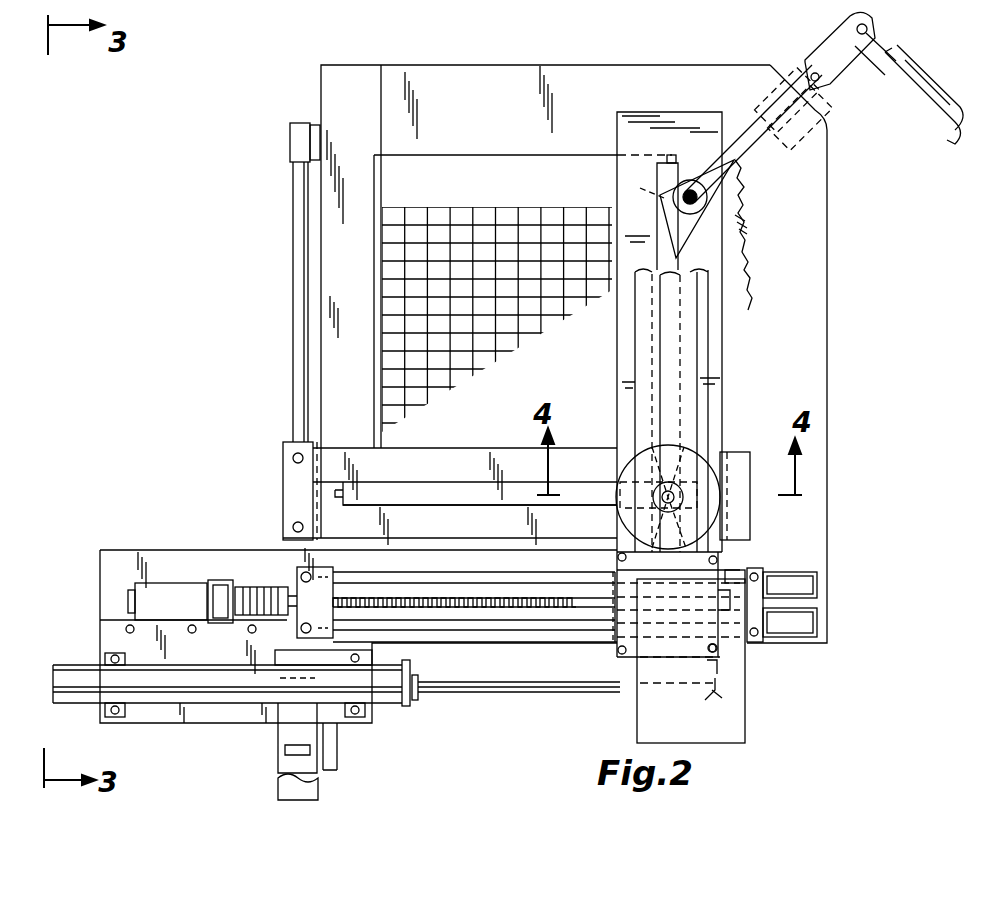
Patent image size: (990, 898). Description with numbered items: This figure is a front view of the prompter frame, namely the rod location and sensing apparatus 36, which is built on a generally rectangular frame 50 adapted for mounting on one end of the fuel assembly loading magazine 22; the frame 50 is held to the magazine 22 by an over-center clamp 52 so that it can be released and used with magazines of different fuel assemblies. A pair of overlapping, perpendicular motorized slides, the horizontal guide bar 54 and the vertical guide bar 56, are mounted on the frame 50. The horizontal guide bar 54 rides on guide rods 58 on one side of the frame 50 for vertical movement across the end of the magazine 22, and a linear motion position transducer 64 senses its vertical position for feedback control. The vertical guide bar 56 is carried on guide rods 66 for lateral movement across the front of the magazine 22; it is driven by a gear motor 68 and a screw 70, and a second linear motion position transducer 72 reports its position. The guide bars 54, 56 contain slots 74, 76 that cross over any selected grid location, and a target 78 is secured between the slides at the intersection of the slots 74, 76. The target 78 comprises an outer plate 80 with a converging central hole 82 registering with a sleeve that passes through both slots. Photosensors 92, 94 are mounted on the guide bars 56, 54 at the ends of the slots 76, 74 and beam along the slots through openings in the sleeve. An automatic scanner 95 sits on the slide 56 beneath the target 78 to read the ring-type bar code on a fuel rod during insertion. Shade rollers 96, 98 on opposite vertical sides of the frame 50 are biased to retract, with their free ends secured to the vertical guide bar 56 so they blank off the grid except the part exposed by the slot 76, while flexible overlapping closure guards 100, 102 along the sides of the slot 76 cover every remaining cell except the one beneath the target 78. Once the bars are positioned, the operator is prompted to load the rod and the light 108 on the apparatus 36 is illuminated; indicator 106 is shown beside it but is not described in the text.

The fuel assembly loading magazine 22 is at (493, 207).
The rod location and sensing apparatus 36 is at (232, 170).
The frame 50 is at (318, 123).
The over-center clamp 52 is at (815, 60).
The horizontal guide bar 54 is at (500, 455).
The vertical guide bar 56 is at (632, 178).
The guide rods 58 is at (293, 278).
The linear motion position transducer 64 is at (290, 733).
The guide rods 66 is at (545, 628).
The gear motor 68 is at (253, 586).
The screw 70 is at (470, 600).
The linear motion position transducer 72 is at (205, 690).
The slot 74 is at (460, 487).
The slot 76 is at (660, 238).
The target 78 is at (716, 454).
The outer plate 80 is at (705, 506).
The converging central hole 82 is at (676, 497).
The photosensor 92 is at (668, 157).
The photosensor 94 is at (360, 485).
The automatic scanner 95 is at (700, 725).
The shade roller 96 is at (330, 412).
The shade roller 98 is at (795, 302).
The closure guard 100 is at (650, 302).
The closure guard 102 is at (702, 306).
The wait indicator 106 is at (819, 590).
The light 108 is at (817, 632).